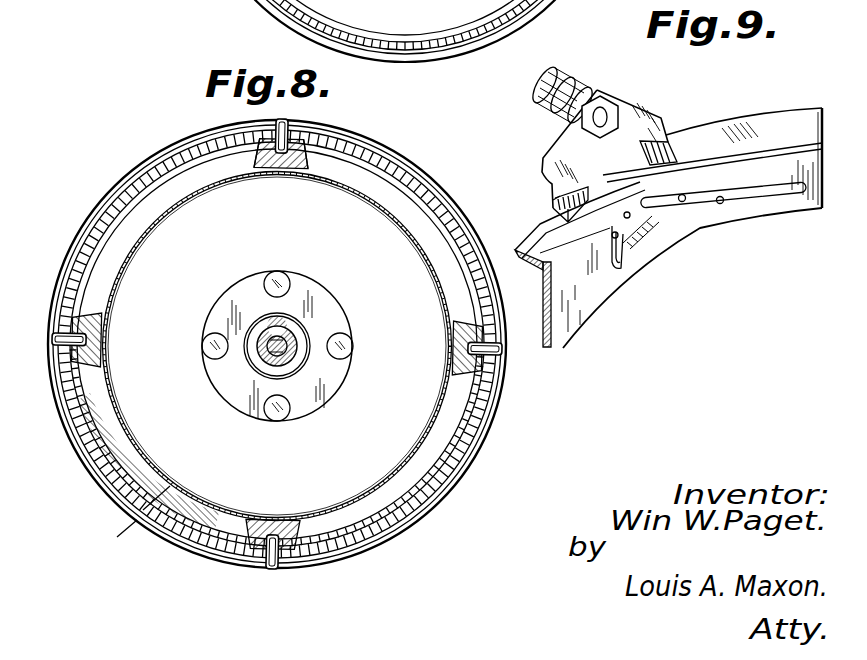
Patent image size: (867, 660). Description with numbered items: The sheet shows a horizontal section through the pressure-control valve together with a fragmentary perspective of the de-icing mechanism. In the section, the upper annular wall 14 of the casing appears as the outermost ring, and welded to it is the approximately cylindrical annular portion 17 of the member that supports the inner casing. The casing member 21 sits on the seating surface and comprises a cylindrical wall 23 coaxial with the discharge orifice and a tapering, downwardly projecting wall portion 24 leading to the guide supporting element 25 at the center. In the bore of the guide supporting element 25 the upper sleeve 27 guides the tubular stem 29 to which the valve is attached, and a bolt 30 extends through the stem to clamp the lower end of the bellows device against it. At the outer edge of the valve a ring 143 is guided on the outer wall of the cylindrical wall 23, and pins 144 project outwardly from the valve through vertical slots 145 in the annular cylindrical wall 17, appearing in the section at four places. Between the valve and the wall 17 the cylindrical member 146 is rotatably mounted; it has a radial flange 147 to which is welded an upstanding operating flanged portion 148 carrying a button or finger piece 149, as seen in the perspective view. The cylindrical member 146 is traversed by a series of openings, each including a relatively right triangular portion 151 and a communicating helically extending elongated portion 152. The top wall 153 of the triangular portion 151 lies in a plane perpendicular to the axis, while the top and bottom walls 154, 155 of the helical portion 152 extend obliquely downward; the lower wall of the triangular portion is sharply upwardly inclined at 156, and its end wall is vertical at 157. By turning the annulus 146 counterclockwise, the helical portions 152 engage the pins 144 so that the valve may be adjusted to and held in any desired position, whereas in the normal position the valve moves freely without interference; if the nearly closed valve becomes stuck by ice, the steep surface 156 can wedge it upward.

In FIG. 8, the upper annular wall 14 is at (138, 170).
In FIG. 8, the approximately cylindrical annular portion 17 is at (76, 433).
In FIG. 8, the casing member 21 is at (132, 516).
In FIG. 8, the cylindrical wall 23 is at (142, 226).
In FIG. 8, the tapering wall portion 24 is at (368, 452).
In FIG. 8, the guide supporting element 25 is at (313, 293).
In FIG. 8, the upper sleeve 27 is at (303, 355).
In FIG. 8, the tubular stem 29 is at (285, 353).
In FIG. 8, the bolt 30 is at (292, 340).
In FIG. 8, the ring 143 is at (90, 372).
In FIG. 8, the pins 144 is at (294, 130).
In FIG. 8, the vertical slots 145 is at (242, 129).
In FIG. 8, the cylindrical member 146 is at (104, 460).
In FIG. 9, the cylindrical member 146 is at (590, 288).
In FIG. 9, the radial flange 147 is at (750, 135).
In FIG. 9, the upstanding operating flanged portion 148 is at (541, 156).
In FIG. 9, the button or finger piece 149 is at (572, 84).
In FIG. 8, the right triangular portion 151 is at (76, 258).
In FIG. 9, the right triangular portion 151 is at (622, 260).
In FIG. 9, the helically extending elongated portion 152 is at (753, 193).
In FIG. 9, the top wall 153 is at (578, 197).
In FIG. 9, the top wall of helical portion 154 is at (684, 195).
In FIG. 9, the bottom wall of helical portion 155 is at (722, 204).
In FIG. 9, the upwardly inclined lower wall 156 is at (640, 240).
In FIG. 9, the vertical end wall 157 is at (612, 232).